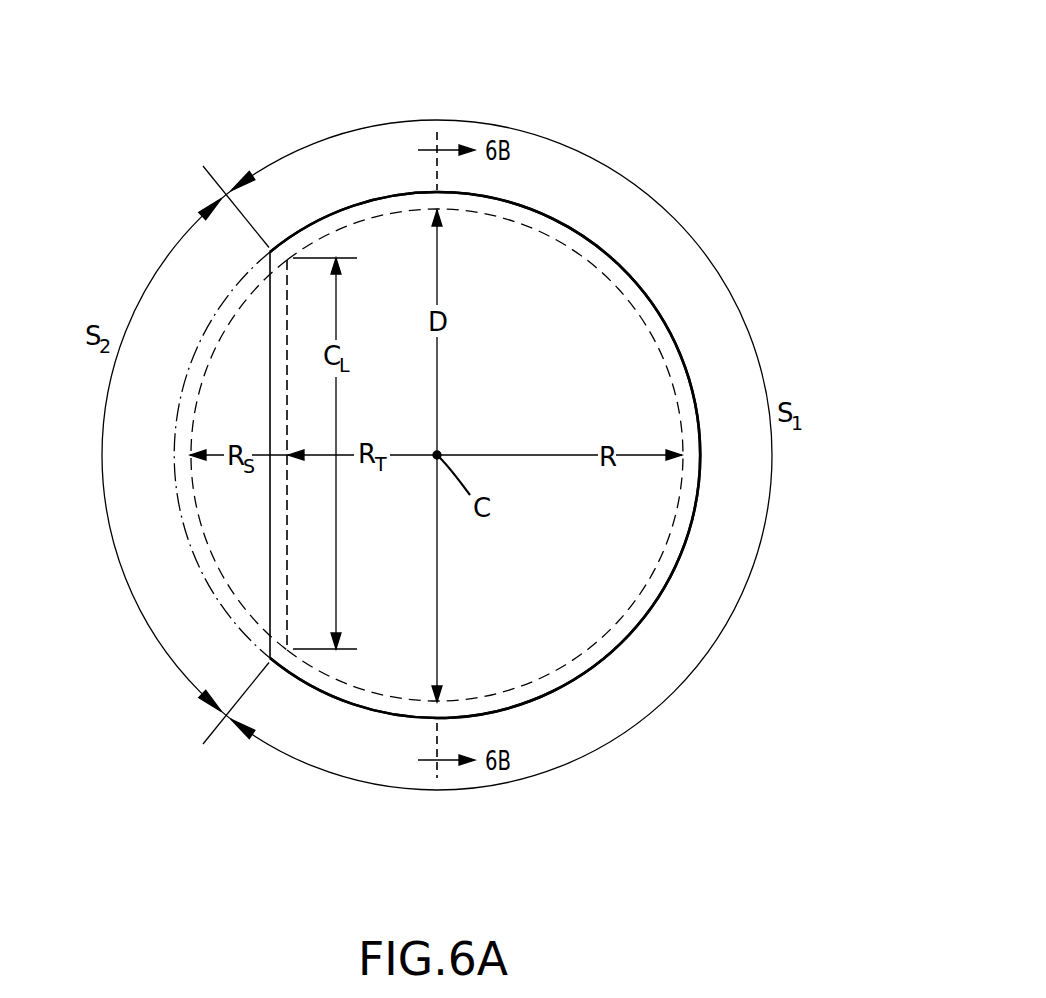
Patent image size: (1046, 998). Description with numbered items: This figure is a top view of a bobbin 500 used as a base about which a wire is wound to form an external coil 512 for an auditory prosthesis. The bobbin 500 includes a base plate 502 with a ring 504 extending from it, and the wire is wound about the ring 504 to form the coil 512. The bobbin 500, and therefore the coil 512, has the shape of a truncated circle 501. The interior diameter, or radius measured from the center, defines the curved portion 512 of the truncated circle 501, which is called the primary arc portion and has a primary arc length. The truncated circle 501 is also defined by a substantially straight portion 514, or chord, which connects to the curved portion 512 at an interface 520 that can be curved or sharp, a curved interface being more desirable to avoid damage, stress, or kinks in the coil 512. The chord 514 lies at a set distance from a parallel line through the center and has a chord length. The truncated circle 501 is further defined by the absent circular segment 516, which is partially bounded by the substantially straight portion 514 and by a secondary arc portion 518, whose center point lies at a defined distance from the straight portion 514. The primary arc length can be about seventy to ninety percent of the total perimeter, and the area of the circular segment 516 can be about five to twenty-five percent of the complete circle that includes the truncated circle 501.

The bobbin 500 is at (699, 77).
The truncated circle 501 is at (573, 280).
The base plate 502 is at (594, 347).
The ring 504 is at (350, 205).
The coil 512 is at (663, 543).
The substantially straight portion 514 is at (288, 483).
The circular segment 516 is at (198, 507).
The secondary arc portion 518 is at (230, 590).
The interface 520 is at (292, 258).